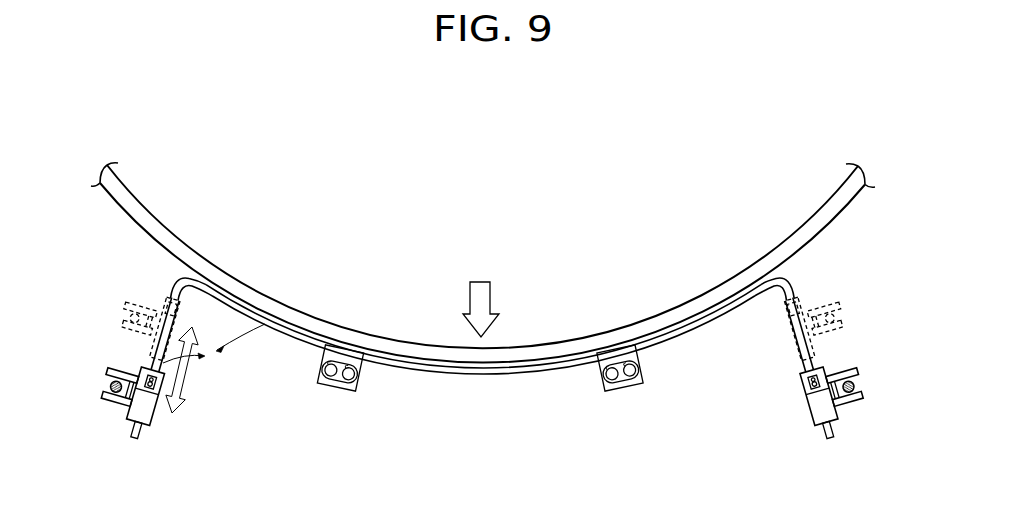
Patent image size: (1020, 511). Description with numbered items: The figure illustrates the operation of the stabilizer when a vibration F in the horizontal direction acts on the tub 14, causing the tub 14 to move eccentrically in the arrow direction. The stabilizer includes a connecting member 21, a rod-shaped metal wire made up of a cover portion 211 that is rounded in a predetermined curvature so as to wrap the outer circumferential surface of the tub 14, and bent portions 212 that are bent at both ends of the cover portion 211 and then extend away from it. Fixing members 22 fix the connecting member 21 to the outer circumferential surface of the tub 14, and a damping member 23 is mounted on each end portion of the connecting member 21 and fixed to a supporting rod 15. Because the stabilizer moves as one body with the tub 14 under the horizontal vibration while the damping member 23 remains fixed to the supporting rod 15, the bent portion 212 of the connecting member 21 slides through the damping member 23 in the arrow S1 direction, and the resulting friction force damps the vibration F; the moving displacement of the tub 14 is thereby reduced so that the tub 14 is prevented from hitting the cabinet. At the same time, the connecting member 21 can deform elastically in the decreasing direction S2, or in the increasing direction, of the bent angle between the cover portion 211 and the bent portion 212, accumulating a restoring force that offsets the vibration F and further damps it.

The tub 14 is at (144, 219).
The connecting member 21 is at (63, 245).
The cover portion 211 is at (185, 300).
The bent portion 212 is at (160, 321).
The fixing member 22 is at (336, 398).
The damping member 23 is at (138, 414).
The supporting rod 15 is at (112, 386).
The vibration F is at (481, 295).
The arrow S1 direction S1 is at (178, 384).
The decreasing direction S2 is at (214, 355).